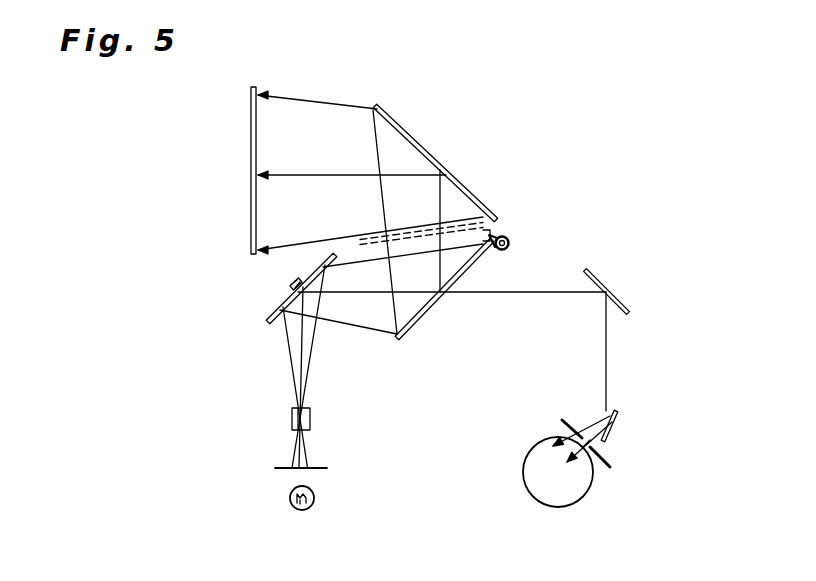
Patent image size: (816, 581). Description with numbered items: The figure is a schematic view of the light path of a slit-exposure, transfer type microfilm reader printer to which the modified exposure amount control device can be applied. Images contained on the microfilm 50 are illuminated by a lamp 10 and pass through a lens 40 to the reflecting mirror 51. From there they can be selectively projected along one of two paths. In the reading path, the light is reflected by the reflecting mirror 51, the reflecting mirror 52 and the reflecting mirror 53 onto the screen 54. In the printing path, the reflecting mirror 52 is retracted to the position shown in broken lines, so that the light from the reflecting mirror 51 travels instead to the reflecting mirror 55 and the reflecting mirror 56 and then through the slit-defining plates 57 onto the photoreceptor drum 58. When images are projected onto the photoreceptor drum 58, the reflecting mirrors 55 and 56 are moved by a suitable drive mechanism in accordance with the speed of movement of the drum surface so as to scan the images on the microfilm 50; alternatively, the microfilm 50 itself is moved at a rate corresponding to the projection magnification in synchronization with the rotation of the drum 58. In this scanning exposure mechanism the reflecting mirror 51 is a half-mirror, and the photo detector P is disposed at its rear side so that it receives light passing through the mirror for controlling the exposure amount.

The lamp 10 is at (315, 495).
The lens 40 is at (311, 417).
The microfilm 50 is at (290, 468).
The reflecting mirror 51 is at (277, 311).
The photo detector P is at (291, 280).
The reflecting mirror 52 is at (431, 308).
The reflecting mirror 53 is at (407, 133).
The screen 54 is at (251, 140).
The reflecting mirror 55 is at (602, 278).
The reflecting mirror 56 is at (619, 412).
The slit-defining plates 57 is at (611, 462).
The photoreceptor drum 58 is at (591, 490).